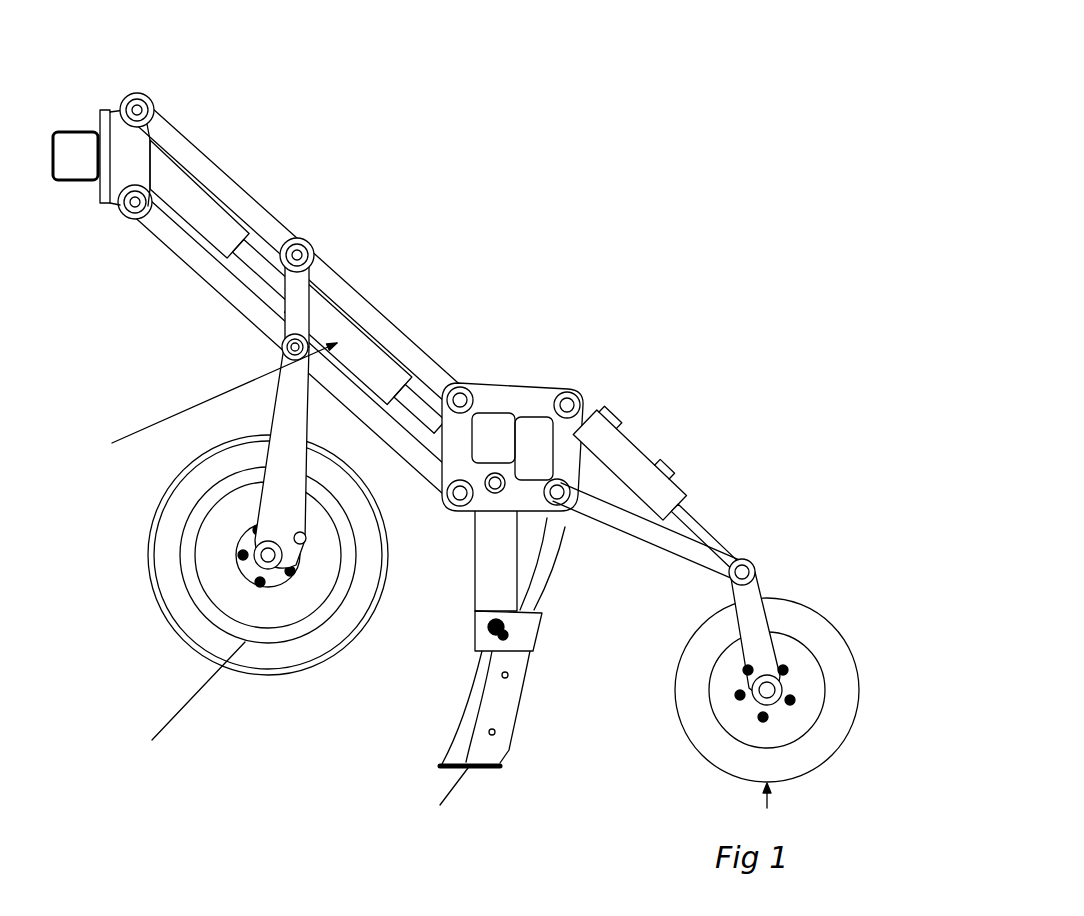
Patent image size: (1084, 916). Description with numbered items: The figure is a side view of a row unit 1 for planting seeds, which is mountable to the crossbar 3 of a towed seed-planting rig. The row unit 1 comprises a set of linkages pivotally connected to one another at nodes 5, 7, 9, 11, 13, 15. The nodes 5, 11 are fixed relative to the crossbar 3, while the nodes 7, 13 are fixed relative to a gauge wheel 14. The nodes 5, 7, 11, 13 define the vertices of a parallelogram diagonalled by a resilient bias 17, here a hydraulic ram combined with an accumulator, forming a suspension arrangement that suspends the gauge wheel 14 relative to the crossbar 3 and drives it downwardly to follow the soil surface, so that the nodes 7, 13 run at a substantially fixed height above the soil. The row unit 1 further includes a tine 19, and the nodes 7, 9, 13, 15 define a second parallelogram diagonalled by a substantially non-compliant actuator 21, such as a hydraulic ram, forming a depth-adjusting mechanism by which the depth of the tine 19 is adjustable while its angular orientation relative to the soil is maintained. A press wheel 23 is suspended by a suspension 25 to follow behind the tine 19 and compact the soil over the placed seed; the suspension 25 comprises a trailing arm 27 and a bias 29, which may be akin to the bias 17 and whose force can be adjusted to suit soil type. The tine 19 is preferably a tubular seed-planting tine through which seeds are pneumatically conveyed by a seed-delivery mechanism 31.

The row unit 1 is at (610, 218).
The crossbar 3 is at (75, 128).
The node 5 is at (152, 97).
The node 7 is at (313, 242).
The node 9 is at (478, 393).
The node 11 is at (120, 212).
The node 13 is at (280, 353).
The gauge wheel 14 is at (150, 497).
The node 15 is at (455, 517).
The resilient bias 17 is at (117, 283).
The tine 19 is at (435, 715).
The actuator 21 is at (392, 317).
The press wheel 23 is at (848, 595).
The suspension 25 is at (690, 418).
The trailing arm 27 is at (633, 533).
The bias 29 is at (692, 490).
The seed-delivery mechanism 31 is at (533, 580).